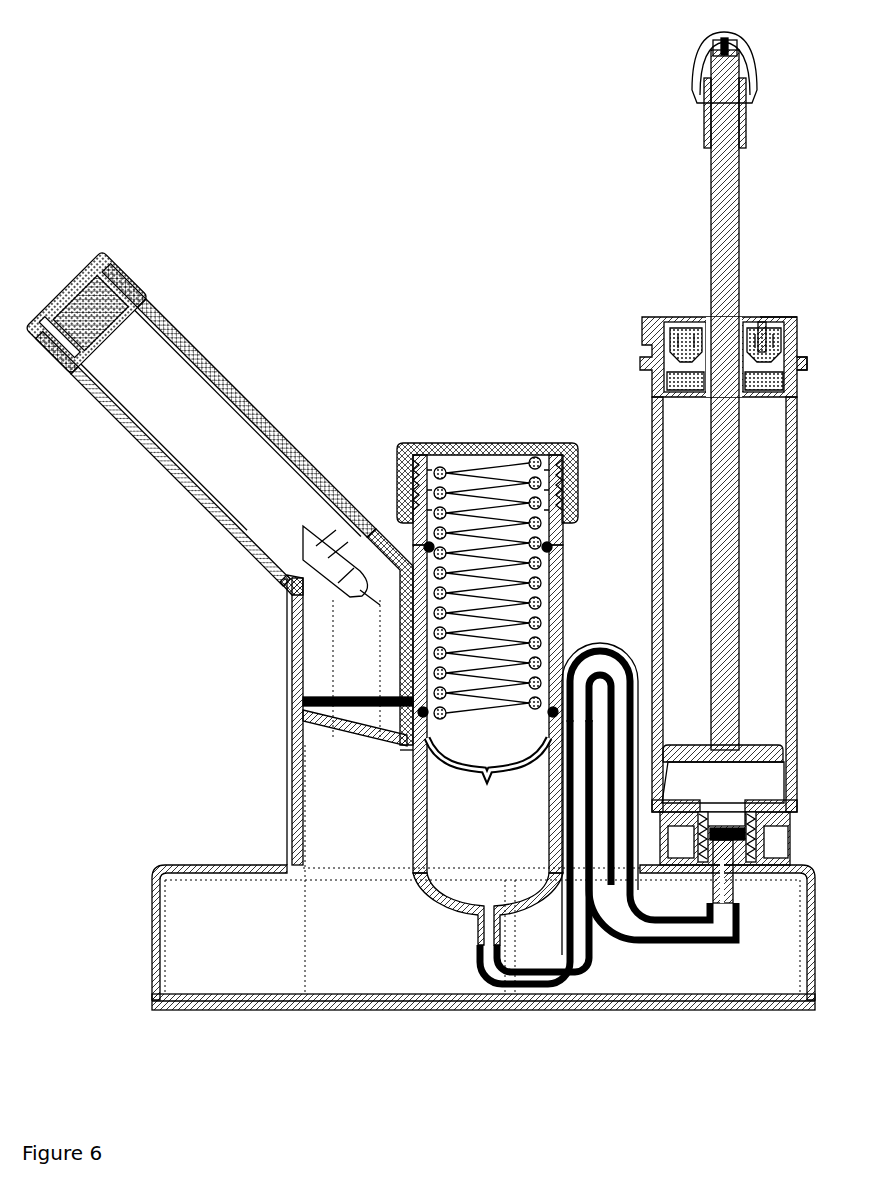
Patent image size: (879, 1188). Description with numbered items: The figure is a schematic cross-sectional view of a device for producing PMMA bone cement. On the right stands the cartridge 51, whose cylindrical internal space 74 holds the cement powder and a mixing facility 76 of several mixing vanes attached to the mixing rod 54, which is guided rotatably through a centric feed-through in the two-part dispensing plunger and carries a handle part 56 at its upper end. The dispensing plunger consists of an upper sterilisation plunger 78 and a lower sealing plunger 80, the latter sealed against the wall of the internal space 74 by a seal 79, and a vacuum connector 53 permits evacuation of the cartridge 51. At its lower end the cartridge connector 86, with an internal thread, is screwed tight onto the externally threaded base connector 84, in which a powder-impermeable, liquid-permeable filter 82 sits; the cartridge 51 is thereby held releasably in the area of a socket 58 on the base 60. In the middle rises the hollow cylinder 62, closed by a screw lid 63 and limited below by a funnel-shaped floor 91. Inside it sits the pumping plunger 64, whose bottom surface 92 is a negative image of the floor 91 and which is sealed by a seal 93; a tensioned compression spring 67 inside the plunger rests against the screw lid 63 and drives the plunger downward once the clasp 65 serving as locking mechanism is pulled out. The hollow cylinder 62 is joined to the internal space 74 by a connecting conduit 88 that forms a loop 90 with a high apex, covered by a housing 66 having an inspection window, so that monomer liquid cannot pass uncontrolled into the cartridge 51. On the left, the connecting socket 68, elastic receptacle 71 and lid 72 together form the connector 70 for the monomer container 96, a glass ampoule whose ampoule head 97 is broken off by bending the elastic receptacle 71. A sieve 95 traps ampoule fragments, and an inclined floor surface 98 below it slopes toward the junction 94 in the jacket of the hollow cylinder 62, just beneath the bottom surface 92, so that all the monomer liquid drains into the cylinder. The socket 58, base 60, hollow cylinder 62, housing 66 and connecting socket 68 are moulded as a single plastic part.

The cartridge 51 is at (657, 550).
The vacuum connector 53 is at (682, 320).
The mixing rod 54 is at (720, 210).
The handle part 56 is at (742, 50).
The socket 58 is at (788, 870).
The base 60 is at (155, 918).
The hollow cylinder 62 is at (468, 815).
The screw lid 63 is at (402, 445).
The pumping plunger 64 is at (540, 688).
The clasp 65 is at (422, 548).
The housing 66 is at (602, 648).
The compression spring 67 is at (483, 513).
The connecting socket 68 is at (287, 758).
The connector 70 is at (176, 236).
The elastic receptacle 71 is at (120, 418).
The lid 72 is at (103, 328).
The internal space 74 is at (745, 550).
The mixing facility 76 is at (660, 808).
The sterilisation plunger 78 is at (663, 322).
The seal 79 is at (778, 317).
The sealing plunger 80 is at (763, 318).
The filter 82 is at (717, 843).
The base connector 84 is at (737, 853).
The cartridge connector 86 is at (753, 828).
The connecting conduit 88 is at (620, 908).
The loop 90 is at (580, 668).
The funnel-shaped floor 91 is at (457, 907).
The bottom surface 92 is at (460, 752).
The seal 93 is at (420, 712).
The junction 94 is at (413, 737).
The sieve 95 is at (350, 704).
The monomer container 96 is at (248, 452).
The ampoule head 97 is at (348, 573).
The inclined floor surface 98 is at (375, 740).